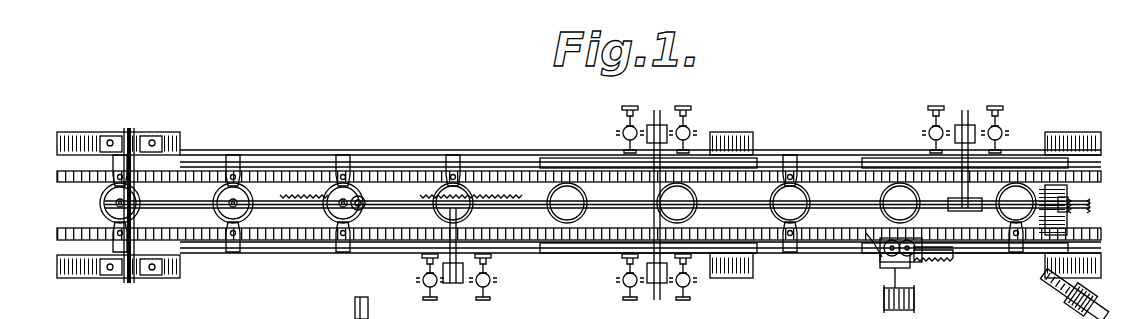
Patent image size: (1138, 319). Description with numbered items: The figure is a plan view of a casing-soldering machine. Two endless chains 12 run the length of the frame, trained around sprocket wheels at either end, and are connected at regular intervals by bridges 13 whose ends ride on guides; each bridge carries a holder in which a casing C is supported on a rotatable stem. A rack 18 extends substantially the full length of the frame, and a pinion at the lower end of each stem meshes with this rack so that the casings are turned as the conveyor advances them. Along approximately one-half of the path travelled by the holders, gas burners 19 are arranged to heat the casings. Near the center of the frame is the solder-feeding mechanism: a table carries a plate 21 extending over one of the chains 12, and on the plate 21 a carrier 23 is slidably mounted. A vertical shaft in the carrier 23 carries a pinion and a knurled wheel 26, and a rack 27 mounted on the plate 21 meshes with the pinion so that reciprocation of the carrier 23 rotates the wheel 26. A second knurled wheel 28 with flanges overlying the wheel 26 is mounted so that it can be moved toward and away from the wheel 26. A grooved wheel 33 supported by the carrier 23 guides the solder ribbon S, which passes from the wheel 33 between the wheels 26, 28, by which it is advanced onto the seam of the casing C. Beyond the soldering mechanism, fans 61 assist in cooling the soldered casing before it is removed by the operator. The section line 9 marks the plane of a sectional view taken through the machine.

The section line 9- 9 is at (120, 305).
The endless chains 12 is at (78, 231).
The rack 18 is at (283, 192).
The bridges 13 is at (793, 161).
The gas burners 19 is at (553, 254).
The casing C is at (325, 208).
The second knurled wheel 28 is at (875, 256).
The knurled wheel 26 is at (915, 253).
The solder ribbon or wire S is at (883, 268).
The grooved wheel 33 is at (891, 275).
The rack 27 is at (936, 245).
The carrier 23 is at (926, 256).
The plate 21 is at (944, 259).
The fans 61 is at (1090, 284).